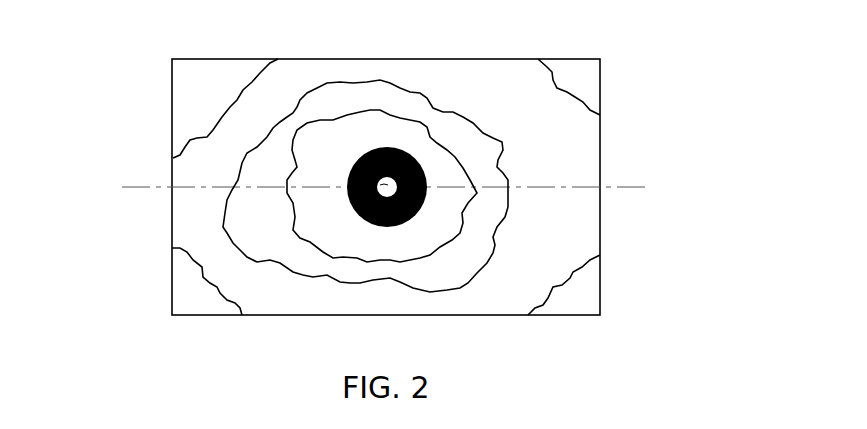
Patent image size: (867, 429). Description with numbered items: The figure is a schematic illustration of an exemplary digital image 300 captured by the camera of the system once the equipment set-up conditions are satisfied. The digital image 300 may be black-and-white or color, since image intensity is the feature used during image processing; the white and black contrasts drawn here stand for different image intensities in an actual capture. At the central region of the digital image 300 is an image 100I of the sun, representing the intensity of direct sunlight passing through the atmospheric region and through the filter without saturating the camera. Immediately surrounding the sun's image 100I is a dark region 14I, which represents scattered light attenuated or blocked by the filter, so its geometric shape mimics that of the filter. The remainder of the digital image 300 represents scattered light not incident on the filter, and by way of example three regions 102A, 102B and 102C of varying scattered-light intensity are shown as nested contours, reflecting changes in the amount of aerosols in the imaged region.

The digital image 300 is at (127, 60).
The image of the sun 100I is at (350, 165).
The dark region 14I is at (347, 193).
The region of scattered-light intensity 102A is at (440, 163).
The region of scattered-light intensity 102B is at (493, 217).
The region of scattered-light intensity 102C is at (563, 252).